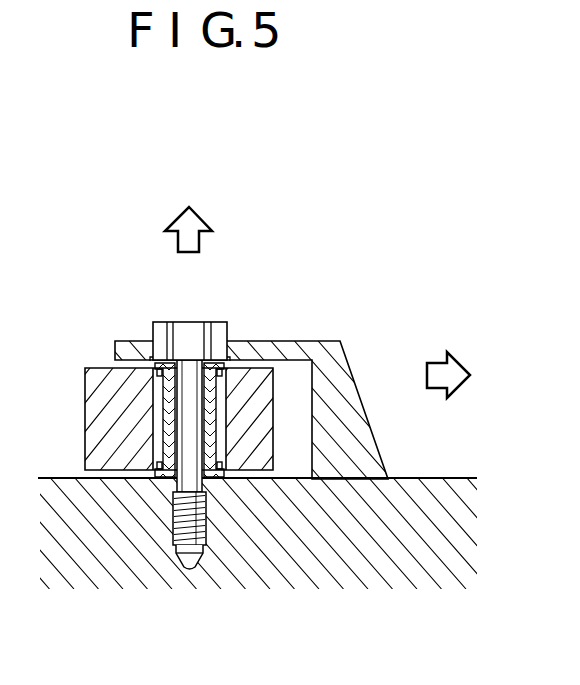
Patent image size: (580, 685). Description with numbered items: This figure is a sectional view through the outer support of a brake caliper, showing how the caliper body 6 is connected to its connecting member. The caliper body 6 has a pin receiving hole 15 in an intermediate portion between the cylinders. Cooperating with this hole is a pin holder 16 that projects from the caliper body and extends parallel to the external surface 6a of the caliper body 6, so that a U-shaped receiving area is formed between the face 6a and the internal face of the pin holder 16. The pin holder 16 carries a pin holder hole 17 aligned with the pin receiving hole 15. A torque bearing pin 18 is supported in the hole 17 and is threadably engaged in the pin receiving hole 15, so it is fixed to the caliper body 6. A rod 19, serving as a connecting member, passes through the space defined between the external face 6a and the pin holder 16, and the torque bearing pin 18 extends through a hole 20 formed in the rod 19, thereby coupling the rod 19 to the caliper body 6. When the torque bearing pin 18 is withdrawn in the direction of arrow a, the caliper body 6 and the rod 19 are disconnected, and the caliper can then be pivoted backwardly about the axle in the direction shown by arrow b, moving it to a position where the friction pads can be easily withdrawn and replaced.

The caliper body 6 is at (335, 557).
The surface of the caliper body 6a is at (431, 478).
The pin receiving hole 15 is at (200, 561).
The pin holder 16 is at (291, 340).
The pin holder hole 17 is at (203, 332).
The torque bearing pin 18 is at (170, 321).
The rod 19 is at (85, 391).
The hole 20 is at (170, 440).
The arrow a is at (178, 243).
The arrow b is at (433, 363).